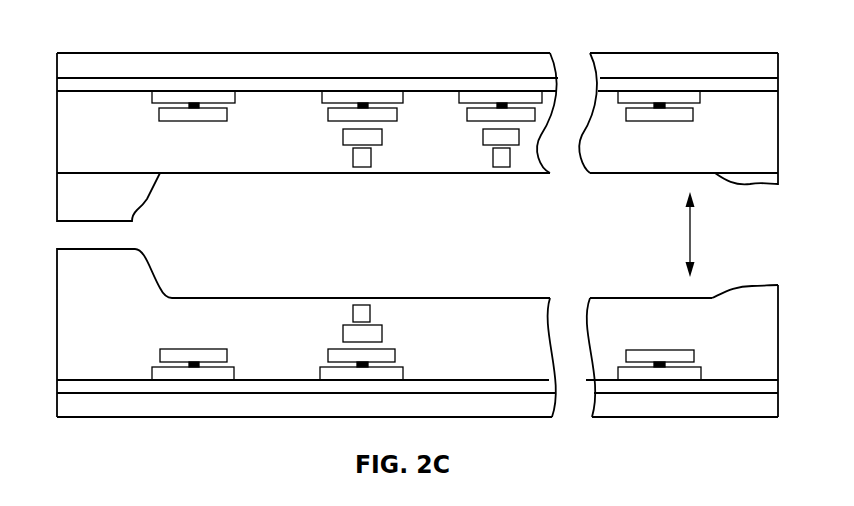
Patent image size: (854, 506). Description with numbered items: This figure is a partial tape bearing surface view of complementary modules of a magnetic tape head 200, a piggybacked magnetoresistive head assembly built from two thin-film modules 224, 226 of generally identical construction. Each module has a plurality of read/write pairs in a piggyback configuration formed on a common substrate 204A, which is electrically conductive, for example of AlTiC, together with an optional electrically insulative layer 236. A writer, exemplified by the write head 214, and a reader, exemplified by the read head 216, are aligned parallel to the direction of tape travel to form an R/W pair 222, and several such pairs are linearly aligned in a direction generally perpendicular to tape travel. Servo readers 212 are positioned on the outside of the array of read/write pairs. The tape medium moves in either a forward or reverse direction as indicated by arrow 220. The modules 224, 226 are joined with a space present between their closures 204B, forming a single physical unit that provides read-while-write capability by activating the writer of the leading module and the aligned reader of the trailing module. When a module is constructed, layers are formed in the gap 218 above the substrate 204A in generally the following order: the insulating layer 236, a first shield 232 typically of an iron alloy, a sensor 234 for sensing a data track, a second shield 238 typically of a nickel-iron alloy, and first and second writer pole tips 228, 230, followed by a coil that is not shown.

The magnetic tape head 200 is at (355, 43).
The common substrate 204A is at (177, 76).
The closures 204B is at (150, 204).
The servo readers 212 is at (228, 345).
The write head 214 is at (355, 303).
The read head 216 is at (347, 350).
The gap 218 is at (235, 173).
The arrow 220 is at (691, 238).
The R/W pair 222 is at (373, 285).
The thin-film module 224 is at (708, 53).
The thin-film module 226 is at (697, 417).
The first writer pole tip 228 is at (343, 333).
The second writer pole tip 230 is at (353, 305).
The first shield 232 is at (322, 373).
The sensor 234 is at (327, 363).
The electrically insulative layer 236 is at (770, 374).
The second shield 238 is at (328, 361).